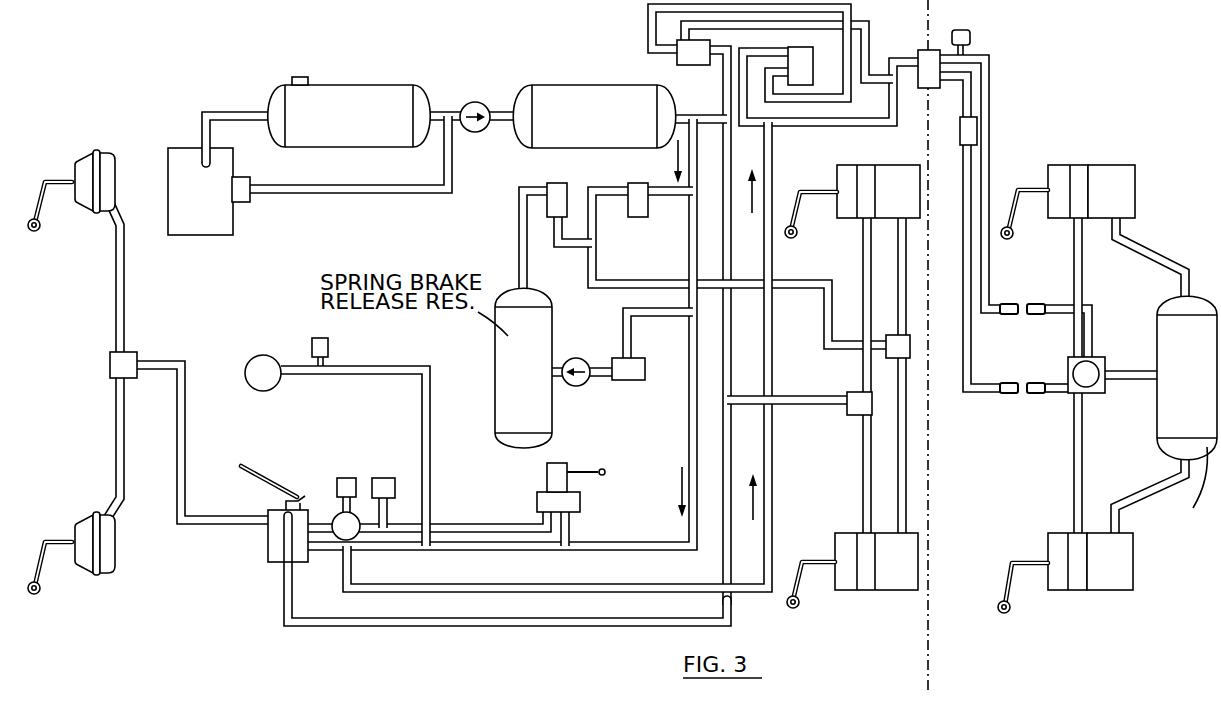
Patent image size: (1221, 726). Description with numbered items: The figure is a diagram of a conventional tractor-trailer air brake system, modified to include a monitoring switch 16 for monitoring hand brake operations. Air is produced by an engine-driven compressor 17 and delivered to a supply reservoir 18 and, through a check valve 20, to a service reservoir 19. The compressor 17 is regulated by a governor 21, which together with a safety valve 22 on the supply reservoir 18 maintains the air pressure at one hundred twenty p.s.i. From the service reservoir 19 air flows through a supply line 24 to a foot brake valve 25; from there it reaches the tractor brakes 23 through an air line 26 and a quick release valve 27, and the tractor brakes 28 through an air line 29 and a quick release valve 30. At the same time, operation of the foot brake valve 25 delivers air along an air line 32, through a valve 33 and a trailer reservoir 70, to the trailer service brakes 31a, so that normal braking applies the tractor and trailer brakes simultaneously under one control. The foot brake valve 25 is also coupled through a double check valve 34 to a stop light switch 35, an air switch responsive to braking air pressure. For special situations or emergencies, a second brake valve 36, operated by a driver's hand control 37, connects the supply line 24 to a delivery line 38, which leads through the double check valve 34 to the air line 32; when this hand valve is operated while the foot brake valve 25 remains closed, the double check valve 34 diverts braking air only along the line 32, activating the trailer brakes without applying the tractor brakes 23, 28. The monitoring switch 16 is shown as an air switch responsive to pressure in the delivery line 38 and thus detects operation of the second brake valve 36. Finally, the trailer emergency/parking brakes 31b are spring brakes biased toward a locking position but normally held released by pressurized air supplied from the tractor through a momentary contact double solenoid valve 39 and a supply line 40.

The monitoring switch 16 is at (385, 477).
The compressor 17 is at (207, 223).
The supply reservoir 18 is at (358, 92).
The service reservoir 19 is at (578, 100).
The check valve 20 is at (475, 102).
The governor 21 is at (248, 203).
The safety valve 22 is at (295, 77).
The tractor brakes 23 is at (110, 153).
The supply line 24 is at (688, 420).
The foot brake valve 25 is at (277, 538).
The air line 26 is at (177, 480).
The quick release valve 27 is at (110, 364).
The tractor brakes 28 is at (890, 163).
The air line 29 is at (597, 588).
The quick release valve 30 is at (853, 415).
The trailer service brakes 31a is at (1123, 163).
The trailer emergency/parking brakes 31b is at (1058, 163).
The air line 32 is at (488, 583).
The valve 33 is at (1104, 357).
The double check valve 34 is at (337, 519).
The stop light switch 35 is at (347, 477).
The second brake valve 36 is at (540, 500).
The driver's hand control 37 is at (578, 470).
The delivery line 38 is at (458, 524).
The momentary contact double solenoid valve 39 is at (962, 131).
The supply line 40 is at (985, 385).
The trailer reservoir 70 is at (1155, 325).